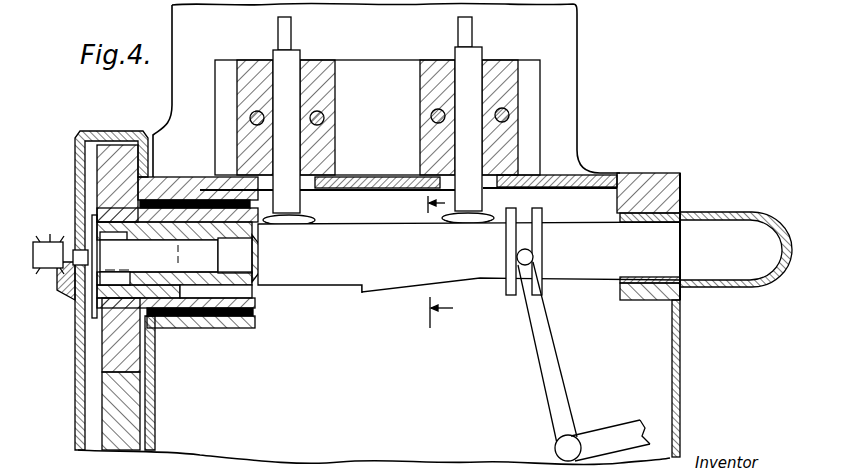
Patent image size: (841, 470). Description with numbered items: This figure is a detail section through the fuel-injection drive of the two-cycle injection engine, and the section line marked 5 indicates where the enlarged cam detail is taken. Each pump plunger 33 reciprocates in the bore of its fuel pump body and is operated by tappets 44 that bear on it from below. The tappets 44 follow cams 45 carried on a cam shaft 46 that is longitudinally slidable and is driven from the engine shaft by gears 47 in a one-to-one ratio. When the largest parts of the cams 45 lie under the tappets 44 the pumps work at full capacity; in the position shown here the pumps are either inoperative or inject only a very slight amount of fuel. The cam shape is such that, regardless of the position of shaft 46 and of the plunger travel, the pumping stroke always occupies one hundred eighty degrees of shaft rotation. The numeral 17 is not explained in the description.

The flange 17 is at (103, 402).
The pump plunger 33 is at (290, 28).
The tappets 44 is at (470, 148).
The cams 45 is at (186, 232).
The cam shaft 46 is at (469, 251).
The gears 47 is at (110, 175).
The dimension reference 5 is at (430, 259).